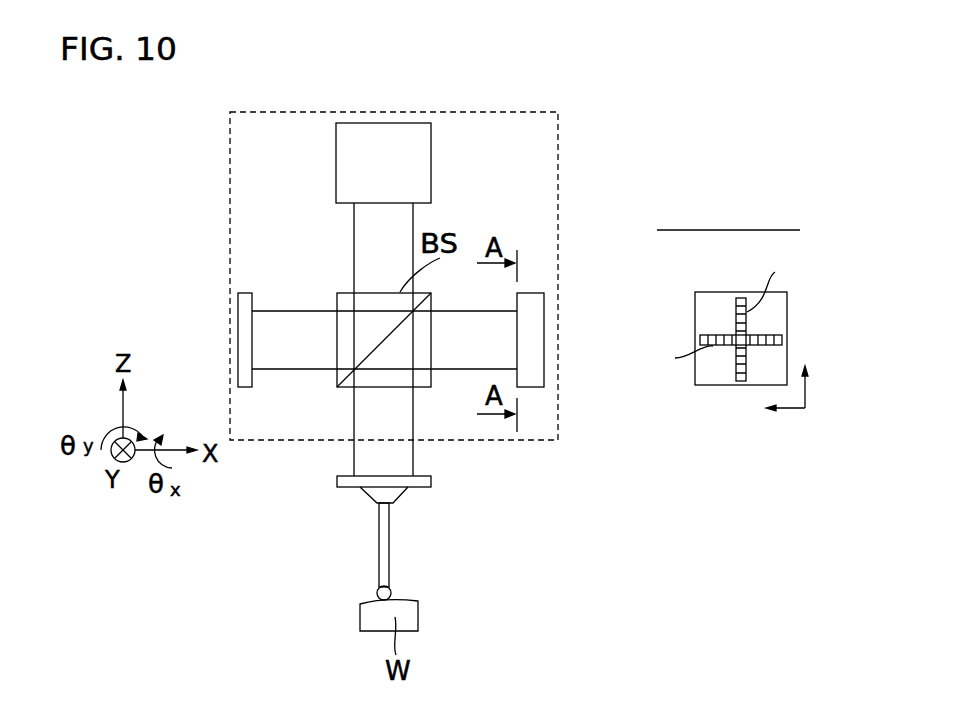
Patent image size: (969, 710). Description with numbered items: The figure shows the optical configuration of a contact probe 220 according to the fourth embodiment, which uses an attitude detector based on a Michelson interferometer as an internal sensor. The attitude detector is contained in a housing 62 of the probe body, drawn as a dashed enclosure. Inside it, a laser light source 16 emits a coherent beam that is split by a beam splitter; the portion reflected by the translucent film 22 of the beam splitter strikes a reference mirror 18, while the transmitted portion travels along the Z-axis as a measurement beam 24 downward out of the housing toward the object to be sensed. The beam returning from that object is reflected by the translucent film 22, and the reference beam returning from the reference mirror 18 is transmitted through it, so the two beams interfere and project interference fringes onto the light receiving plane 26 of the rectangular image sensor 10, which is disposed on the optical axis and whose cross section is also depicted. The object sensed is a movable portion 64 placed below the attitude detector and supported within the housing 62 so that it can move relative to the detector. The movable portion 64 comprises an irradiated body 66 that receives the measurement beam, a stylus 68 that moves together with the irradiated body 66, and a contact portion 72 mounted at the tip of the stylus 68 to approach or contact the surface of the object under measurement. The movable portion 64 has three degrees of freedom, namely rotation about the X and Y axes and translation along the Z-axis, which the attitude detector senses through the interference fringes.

The housing 62 is at (525, 112).
The contact probe 220 is at (586, 163).
The laser light source 16 is at (431, 162).
The reference mirror 18 is at (247, 302).
The translucent film 22 is at (366, 356).
The image sensor 10 is at (715, 298).
The light receiving plane 26 is at (516, 325).
The measurement beam 24 is at (400, 475).
The movable portion 64 is at (324, 534).
The irradiated body 66 is at (337, 479).
The stylus 68 is at (384, 540).
The contact portion 72 is at (329, 586).